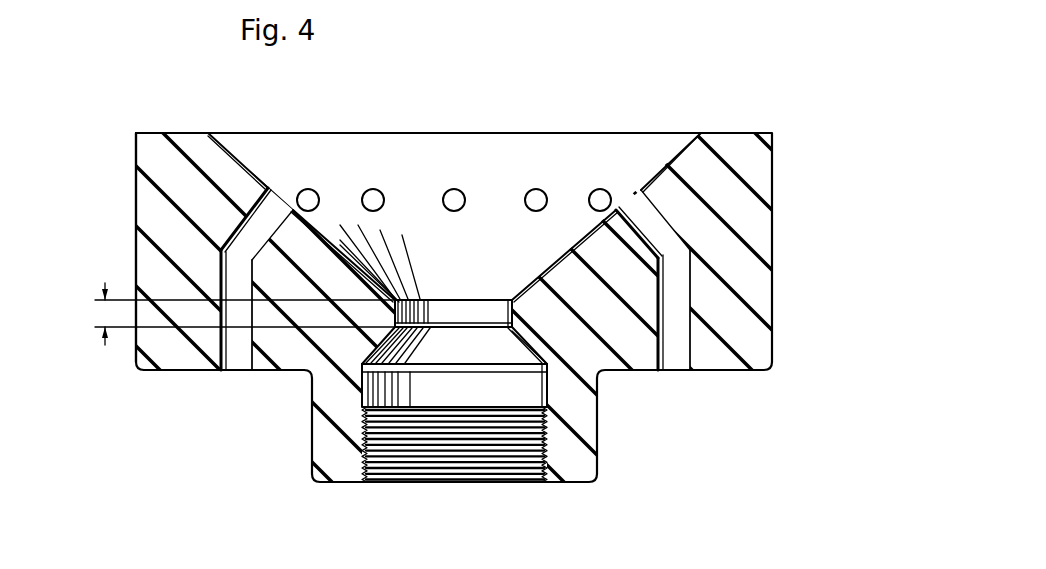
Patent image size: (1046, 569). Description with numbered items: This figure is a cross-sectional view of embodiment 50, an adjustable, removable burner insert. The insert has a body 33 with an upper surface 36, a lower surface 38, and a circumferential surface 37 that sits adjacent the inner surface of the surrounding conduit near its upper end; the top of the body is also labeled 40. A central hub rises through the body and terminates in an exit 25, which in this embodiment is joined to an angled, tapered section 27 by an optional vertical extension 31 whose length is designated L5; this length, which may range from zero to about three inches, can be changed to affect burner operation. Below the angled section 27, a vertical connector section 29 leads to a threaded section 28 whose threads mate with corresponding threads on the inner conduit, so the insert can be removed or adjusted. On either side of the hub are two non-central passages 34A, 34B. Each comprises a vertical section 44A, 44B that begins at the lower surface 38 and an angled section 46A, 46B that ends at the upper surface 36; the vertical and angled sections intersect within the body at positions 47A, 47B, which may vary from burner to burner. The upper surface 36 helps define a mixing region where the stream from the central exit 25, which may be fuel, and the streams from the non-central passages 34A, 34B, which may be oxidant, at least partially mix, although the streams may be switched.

The embodiment of adjustable, removable burner component 50 is at (735, 52).
The body 33 is at (755, 178).
The top surface 40 is at (183, 133).
The upper surface 36 is at (242, 165).
The circumferential surface 37 is at (136, 157).
The lower surface 38 is at (190, 370).
The angled section 46A is at (258, 222).
The angled section 46B is at (660, 222).
The position 47A is at (235, 243).
The position 47B is at (678, 258).
The vertical section 44A is at (238, 268).
The vertical section 44B is at (672, 318).
The non-central passage 34A is at (252, 358).
The non-central passage 34B is at (690, 360).
The exit 25 is at (464, 292).
The vertical extension 31 is at (505, 322).
The angled section 27 is at (525, 350).
The vertical connector section 29 is at (545, 388).
The threaded section 28 is at (388, 467).
The length of vertical section L5 is at (108, 348).